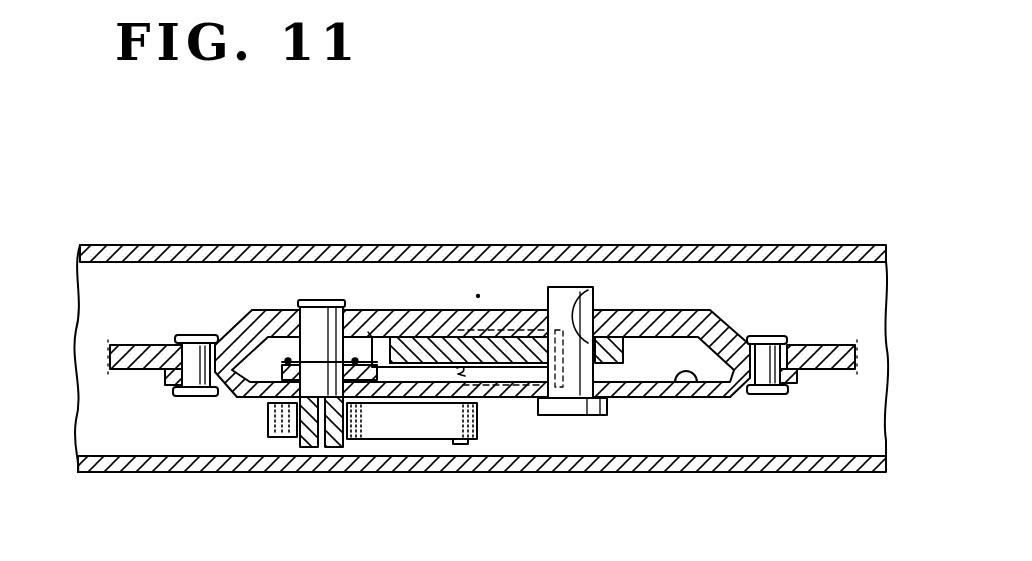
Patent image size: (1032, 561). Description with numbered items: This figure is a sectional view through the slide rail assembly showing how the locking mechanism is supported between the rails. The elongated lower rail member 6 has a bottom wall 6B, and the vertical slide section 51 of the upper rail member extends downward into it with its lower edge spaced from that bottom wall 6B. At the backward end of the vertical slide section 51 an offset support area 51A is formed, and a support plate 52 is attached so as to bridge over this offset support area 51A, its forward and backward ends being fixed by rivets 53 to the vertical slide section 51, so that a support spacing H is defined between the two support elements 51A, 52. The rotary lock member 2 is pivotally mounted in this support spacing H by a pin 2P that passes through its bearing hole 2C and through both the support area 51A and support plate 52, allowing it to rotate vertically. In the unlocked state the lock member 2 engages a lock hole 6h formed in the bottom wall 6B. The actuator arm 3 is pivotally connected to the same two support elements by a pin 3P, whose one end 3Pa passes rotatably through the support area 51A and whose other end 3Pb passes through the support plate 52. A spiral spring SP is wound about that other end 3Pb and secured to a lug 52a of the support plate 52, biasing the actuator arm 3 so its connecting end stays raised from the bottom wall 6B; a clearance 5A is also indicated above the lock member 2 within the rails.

The lower rail member 6 is at (170, 246).
The bottom wall 6B is at (103, 307).
The lock hole 6h is at (460, 366).
The rotary lock member 2 is at (432, 335).
The pin 2P is at (563, 307).
The bearing hole 2C is at (587, 340).
The actuator arm 3 is at (368, 332).
The pin 3P is at (323, 310).
The one end of pin 3Pa is at (305, 297).
The another end of pin 3Pb is at (282, 447).
The clearance 5A is at (478, 295).
The vertical slide section 51 is at (815, 345).
The offset support area 51A is at (660, 310).
The support plate 52 is at (640, 397).
The lug 52a is at (468, 445).
The rivets 53 is at (195, 396).
The spiral spring SP is at (383, 427).
The support spacing H is at (697, 382).